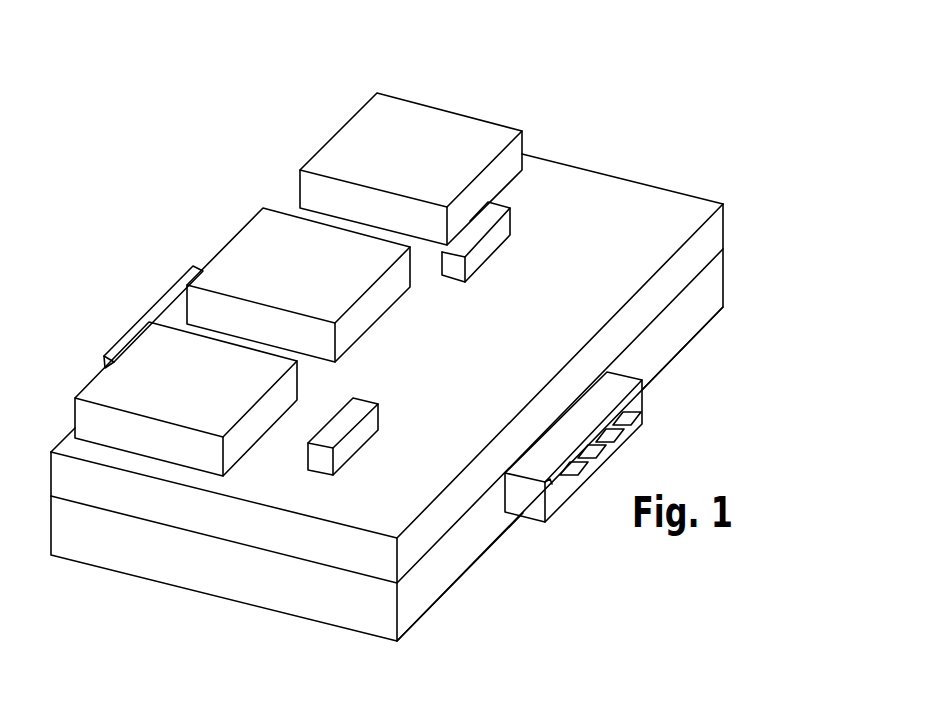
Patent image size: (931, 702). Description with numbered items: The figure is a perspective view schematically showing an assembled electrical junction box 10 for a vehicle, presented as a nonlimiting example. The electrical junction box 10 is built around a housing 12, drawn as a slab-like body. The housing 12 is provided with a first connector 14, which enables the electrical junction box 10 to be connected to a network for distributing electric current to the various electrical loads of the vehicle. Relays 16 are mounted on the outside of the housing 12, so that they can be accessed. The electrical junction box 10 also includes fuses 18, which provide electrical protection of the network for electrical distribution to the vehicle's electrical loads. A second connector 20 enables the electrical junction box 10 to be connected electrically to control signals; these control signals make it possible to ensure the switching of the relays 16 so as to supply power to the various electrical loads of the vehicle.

The electrical junction box 10 is at (689, 75).
The housing 12 is at (594, 176).
The first connector 14 is at (523, 508).
The relays 16 is at (449, 103).
The fuses 18 is at (495, 276).
The second connector 20 is at (173, 292).